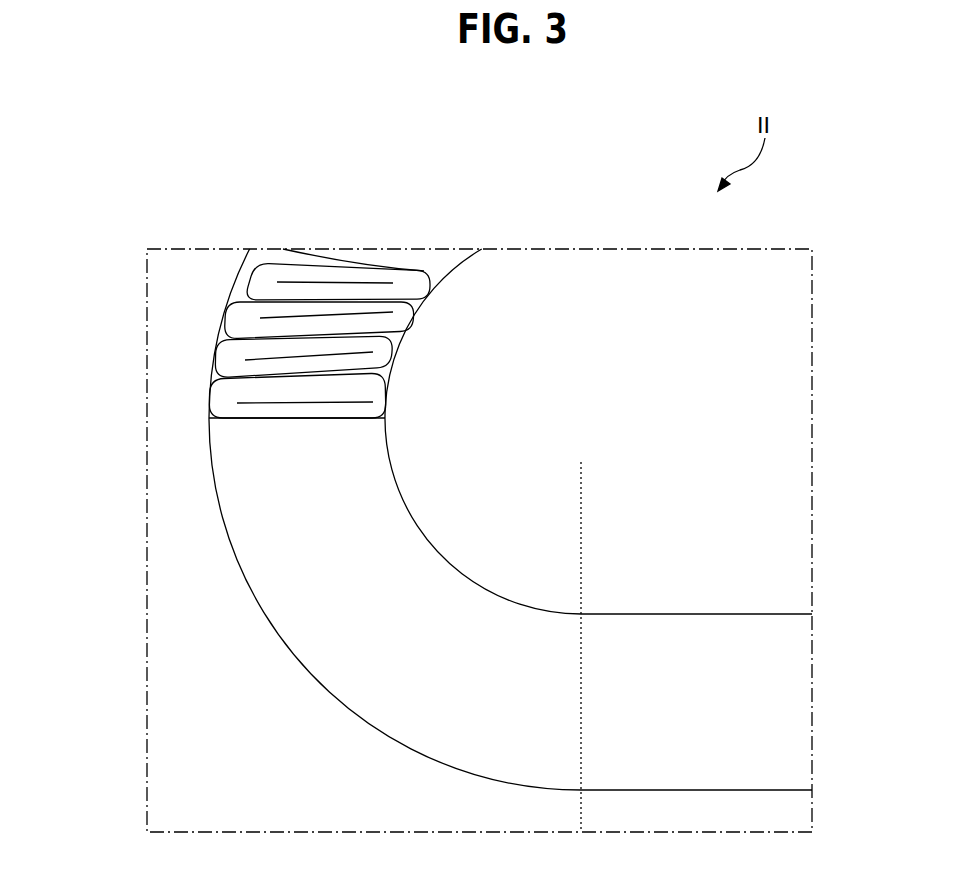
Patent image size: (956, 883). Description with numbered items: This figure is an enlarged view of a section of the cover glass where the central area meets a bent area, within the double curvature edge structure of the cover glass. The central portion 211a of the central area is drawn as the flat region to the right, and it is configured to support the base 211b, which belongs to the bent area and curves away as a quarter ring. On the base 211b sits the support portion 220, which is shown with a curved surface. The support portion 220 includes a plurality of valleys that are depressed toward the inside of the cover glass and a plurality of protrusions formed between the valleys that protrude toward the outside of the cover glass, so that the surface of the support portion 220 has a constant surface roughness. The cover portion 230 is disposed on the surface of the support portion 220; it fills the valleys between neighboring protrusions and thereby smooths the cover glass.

The central portion 211a is at (705, 775).
The base 211b is at (460, 740).
The support portion 220 is at (212, 403).
The cover portion 230 is at (223, 342).